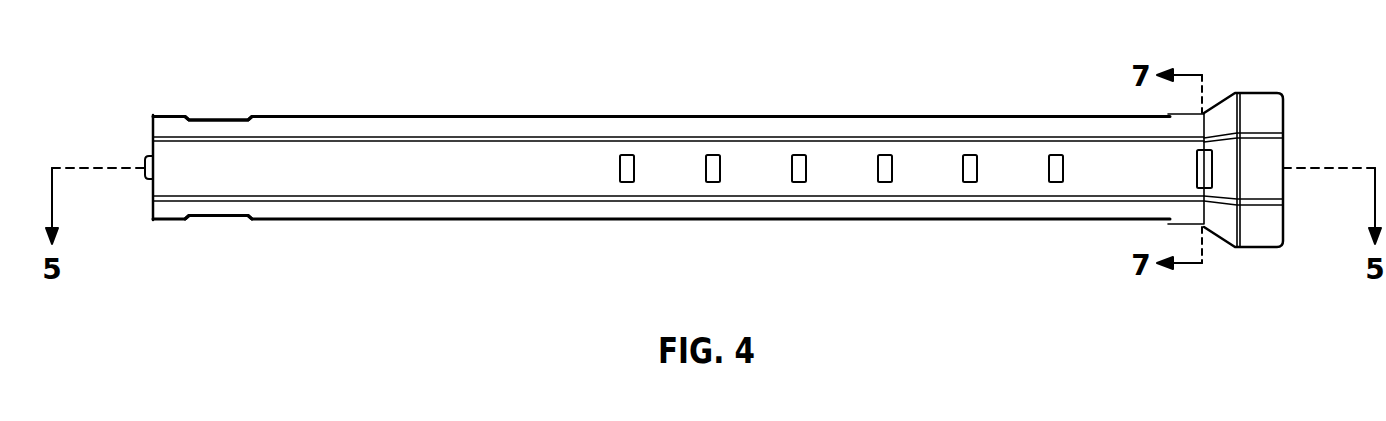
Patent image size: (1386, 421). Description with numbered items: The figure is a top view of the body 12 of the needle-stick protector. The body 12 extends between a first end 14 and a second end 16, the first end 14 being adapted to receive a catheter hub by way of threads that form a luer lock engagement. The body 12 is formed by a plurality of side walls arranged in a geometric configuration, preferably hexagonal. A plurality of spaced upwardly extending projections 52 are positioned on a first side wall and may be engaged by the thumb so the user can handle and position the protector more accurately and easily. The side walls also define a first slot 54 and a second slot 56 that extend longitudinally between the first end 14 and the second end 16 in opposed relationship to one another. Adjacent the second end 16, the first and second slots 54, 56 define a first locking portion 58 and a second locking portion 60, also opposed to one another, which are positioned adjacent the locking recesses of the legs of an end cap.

The body 12 is at (321, 115).
The first end 14 is at (1259, 93).
The second end 16 is at (172, 114).
The projections 52 is at (713, 153).
The first slot 54 is at (559, 115).
The second slot 56 is at (500, 221).
The first locking portion 58 is at (218, 117).
The second locking portion 60 is at (221, 220).